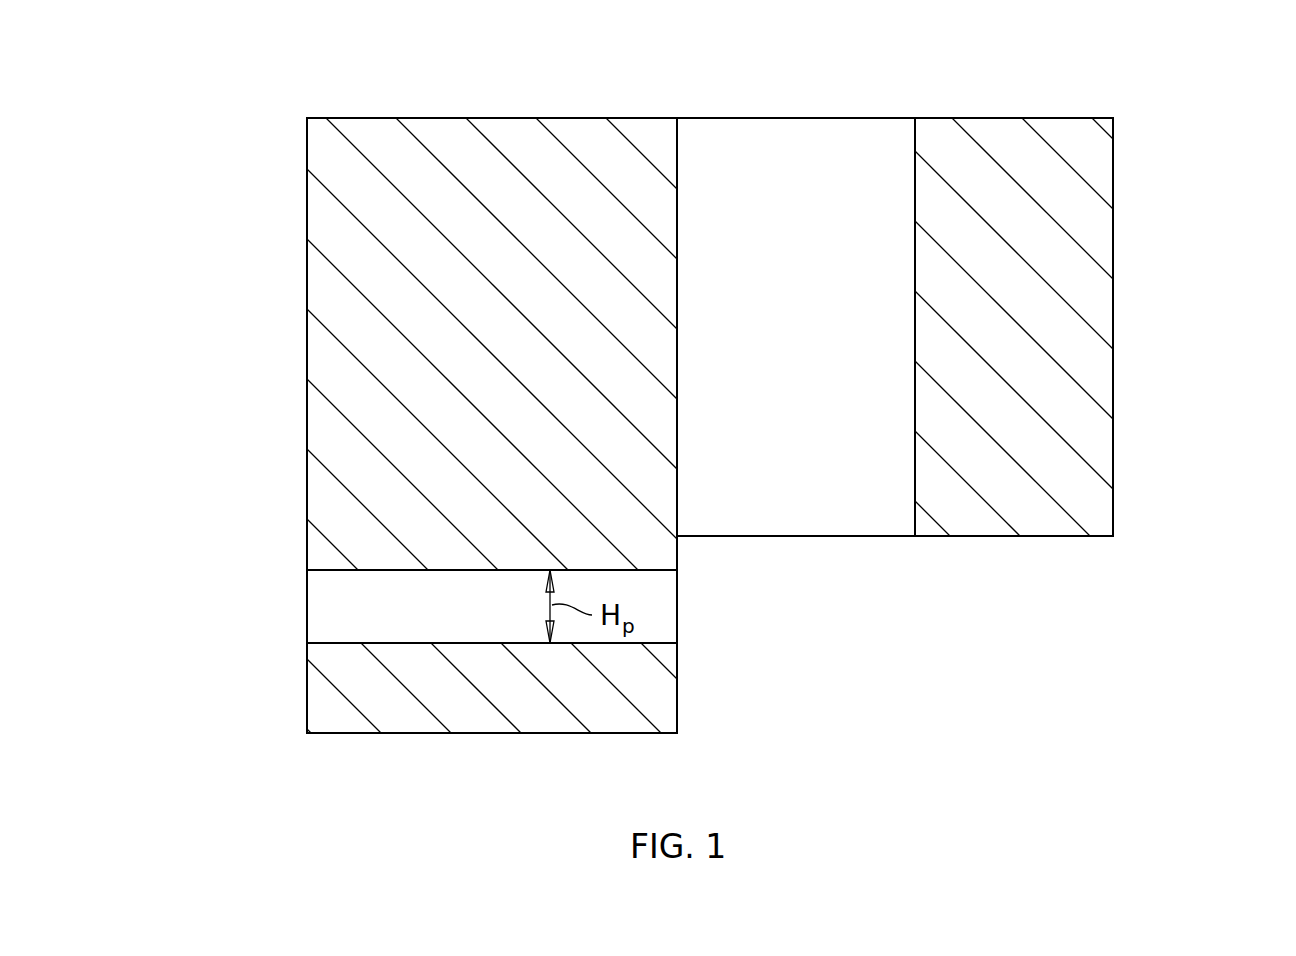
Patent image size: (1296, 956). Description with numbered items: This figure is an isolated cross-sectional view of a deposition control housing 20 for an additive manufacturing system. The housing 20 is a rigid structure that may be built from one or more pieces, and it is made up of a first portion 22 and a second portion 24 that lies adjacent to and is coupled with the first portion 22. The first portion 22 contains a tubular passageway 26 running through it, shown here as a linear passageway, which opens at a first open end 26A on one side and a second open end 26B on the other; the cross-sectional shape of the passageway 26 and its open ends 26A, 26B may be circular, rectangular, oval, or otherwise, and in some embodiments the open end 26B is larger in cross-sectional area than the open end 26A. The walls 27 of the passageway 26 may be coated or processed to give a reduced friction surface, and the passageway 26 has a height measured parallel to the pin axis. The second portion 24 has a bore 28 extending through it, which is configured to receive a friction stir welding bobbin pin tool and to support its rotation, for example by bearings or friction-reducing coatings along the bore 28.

The housing 20 is at (1188, 167).
The first portion 22 is at (677, 760).
The second portion 24 is at (1113, 760).
The passageway 26 is at (375, 612).
The first open end 26A is at (307, 603).
The second open end 26B is at (677, 605).
The walls 27 is at (413, 570).
The bore 28 is at (795, 152).